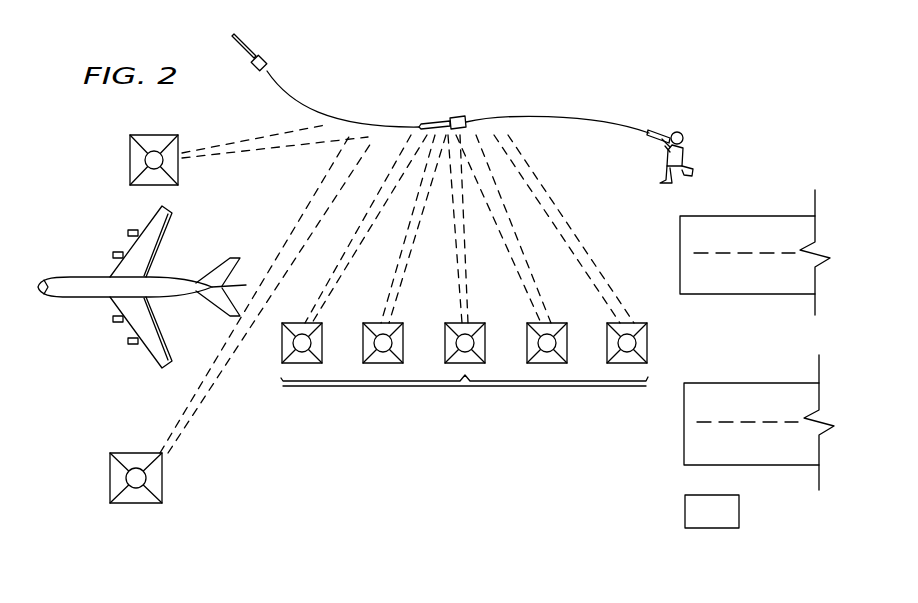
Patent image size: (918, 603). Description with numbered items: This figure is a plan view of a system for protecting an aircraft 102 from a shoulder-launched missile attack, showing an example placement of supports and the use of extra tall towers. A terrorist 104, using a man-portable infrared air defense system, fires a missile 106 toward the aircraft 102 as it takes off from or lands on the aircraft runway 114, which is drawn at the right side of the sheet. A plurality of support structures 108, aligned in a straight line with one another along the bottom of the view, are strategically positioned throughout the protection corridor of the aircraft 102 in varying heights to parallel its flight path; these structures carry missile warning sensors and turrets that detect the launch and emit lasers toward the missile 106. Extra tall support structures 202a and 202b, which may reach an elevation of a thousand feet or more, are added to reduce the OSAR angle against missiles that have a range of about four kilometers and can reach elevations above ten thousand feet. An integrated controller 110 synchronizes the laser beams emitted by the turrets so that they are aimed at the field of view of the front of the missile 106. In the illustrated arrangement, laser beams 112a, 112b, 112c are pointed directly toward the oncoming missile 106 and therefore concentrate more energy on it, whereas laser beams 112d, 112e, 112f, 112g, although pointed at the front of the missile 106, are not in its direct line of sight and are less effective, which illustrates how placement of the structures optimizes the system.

The aircraft 102 is at (80, 278).
The terrorist 104 is at (689, 152).
The missile 106 is at (246, 43).
The support structures 108 is at (464, 369).
The integrated controller 110 is at (685, 512).
The laser beam 112a is at (318, 224).
The laser beam 112b is at (253, 143).
The laser beam 112c is at (411, 143).
The laser beam 112d is at (408, 250).
The laser beam 112e is at (458, 243).
The laser beam 112f is at (471, 130).
The laser beam 112g is at (537, 193).
The aircraft runway 114 is at (748, 296).
The extra tall support structure 202a is at (110, 477).
The extra tall support structure 202b is at (128, 162).